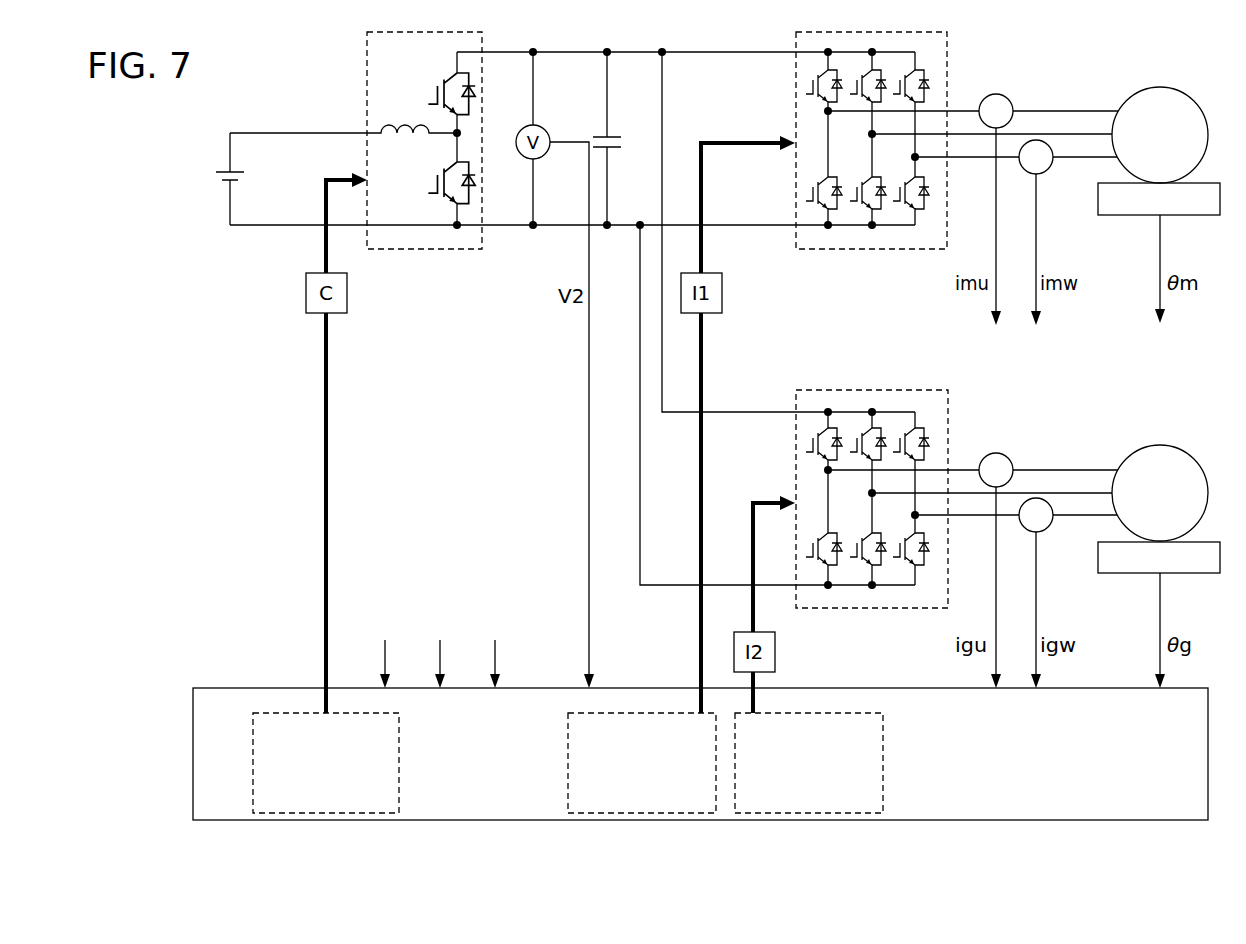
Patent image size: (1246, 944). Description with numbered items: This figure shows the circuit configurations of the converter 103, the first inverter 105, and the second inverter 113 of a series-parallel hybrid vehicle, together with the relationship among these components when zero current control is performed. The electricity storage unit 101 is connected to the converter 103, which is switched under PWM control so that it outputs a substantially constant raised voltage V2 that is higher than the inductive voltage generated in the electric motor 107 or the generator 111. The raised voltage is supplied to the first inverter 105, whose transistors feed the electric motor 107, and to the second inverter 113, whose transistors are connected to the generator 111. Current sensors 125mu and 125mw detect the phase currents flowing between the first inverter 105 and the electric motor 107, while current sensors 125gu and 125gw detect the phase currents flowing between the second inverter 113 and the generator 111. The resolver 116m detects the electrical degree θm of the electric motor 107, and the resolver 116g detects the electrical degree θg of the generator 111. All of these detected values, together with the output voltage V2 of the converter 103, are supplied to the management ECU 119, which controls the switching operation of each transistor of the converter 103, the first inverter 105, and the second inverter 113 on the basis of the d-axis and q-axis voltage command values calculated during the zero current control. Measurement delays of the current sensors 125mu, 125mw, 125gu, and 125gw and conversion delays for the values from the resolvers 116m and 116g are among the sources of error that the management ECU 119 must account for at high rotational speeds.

The electricity storage unit 101 is at (205, 190).
The converter 103 is at (367, 60).
The first inverter 105 is at (863, 250).
The electric motor 107 is at (1191, 91).
The generator 111 is at (1191, 449).
The second inverter 113 is at (860, 610).
The management ECU 119 is at (256, 688).
The current sensor 125mu is at (996, 94).
The current sensor 125mw is at (1046, 173).
The current sensor 125gu is at (996, 453).
The current sensor 125gw is at (1046, 531).
The resolver 116m is at (1116, 216).
The resolver 116g is at (1116, 574).